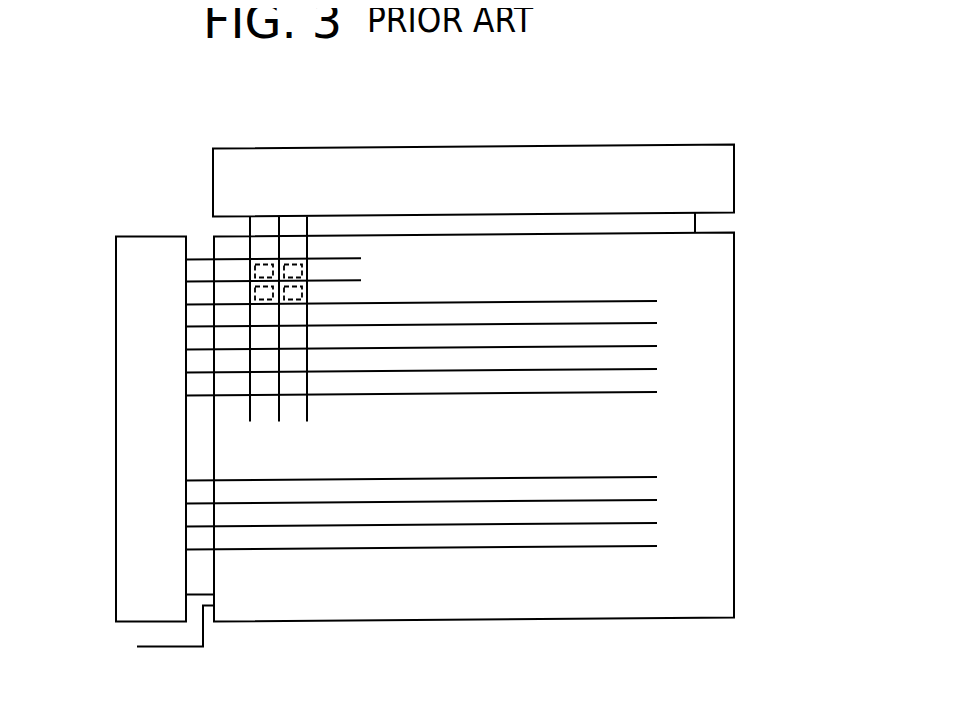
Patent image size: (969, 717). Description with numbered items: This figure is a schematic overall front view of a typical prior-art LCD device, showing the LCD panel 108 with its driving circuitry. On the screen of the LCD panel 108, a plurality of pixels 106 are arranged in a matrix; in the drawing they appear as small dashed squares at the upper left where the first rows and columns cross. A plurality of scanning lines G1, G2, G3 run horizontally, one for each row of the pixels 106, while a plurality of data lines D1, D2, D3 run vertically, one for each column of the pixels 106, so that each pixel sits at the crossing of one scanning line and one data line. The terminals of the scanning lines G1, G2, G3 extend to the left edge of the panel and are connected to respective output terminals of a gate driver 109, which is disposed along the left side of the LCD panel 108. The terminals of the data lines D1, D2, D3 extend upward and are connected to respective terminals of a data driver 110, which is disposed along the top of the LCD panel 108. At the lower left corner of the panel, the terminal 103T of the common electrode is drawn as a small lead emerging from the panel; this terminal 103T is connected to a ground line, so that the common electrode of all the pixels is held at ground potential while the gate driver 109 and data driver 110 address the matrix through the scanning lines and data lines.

The pixel 106 is at (265, 263).
The LCD panel 108 is at (458, 237).
The data driver 110 is at (592, 147).
The gate driver 109 is at (116, 603).
The terminal of the common electrode 103T is at (208, 607).
The data line D1 is at (250, 228).
The data line D2 is at (279, 231).
The data line D3 is at (307, 231).
The scanning line G1 is at (202, 258).
The scanning line G2 is at (202, 282).
The scanning line G3 is at (200, 305).